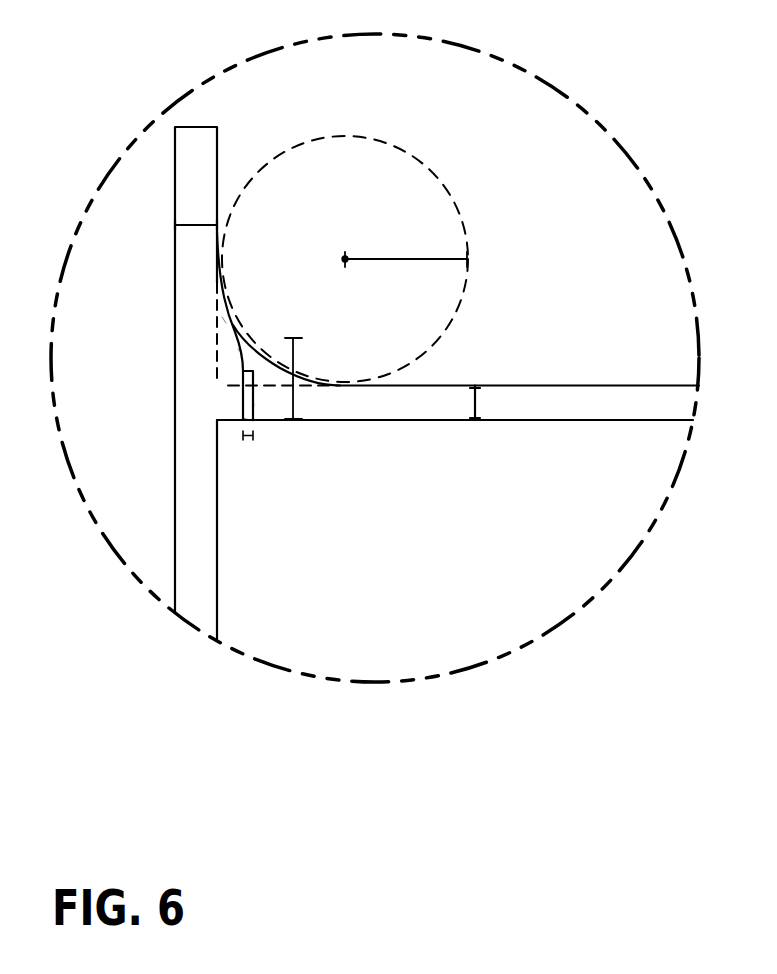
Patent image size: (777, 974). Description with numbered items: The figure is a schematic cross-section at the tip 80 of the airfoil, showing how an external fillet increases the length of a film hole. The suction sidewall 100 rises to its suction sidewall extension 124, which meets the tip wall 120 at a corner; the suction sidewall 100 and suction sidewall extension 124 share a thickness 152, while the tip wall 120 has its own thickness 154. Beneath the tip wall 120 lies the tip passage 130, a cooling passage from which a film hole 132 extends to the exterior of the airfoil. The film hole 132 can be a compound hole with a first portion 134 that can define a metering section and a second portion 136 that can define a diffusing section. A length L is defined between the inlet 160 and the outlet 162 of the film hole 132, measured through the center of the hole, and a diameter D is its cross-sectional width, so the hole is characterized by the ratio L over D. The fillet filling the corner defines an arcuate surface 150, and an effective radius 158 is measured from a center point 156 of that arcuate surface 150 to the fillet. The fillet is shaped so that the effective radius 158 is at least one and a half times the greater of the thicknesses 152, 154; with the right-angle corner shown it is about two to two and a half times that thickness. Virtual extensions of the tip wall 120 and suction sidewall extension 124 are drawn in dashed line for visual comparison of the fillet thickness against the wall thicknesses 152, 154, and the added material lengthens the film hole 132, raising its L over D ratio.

The tip 80 is at (553, 240).
The suction sidewall 100 is at (205, 612).
The tip wall 120 is at (551, 385).
The suction sidewall extension 124 is at (193, 126).
The tip passage 130 is at (502, 581).
The film hole 132 is at (262, 409).
The first portion 134 is at (242, 406).
The second portion 136 is at (240, 352).
The arcuate surface 150 is at (224, 320).
The thickness 152 is at (194, 224).
The thickness 154 is at (477, 398).
The center point 156 is at (346, 259).
The effective radius 158 is at (402, 259).
The inlet 160 is at (245, 420).
The outlet 162 is at (253, 371).
The length L is at (296, 362).
The diameter D is at (244, 441).